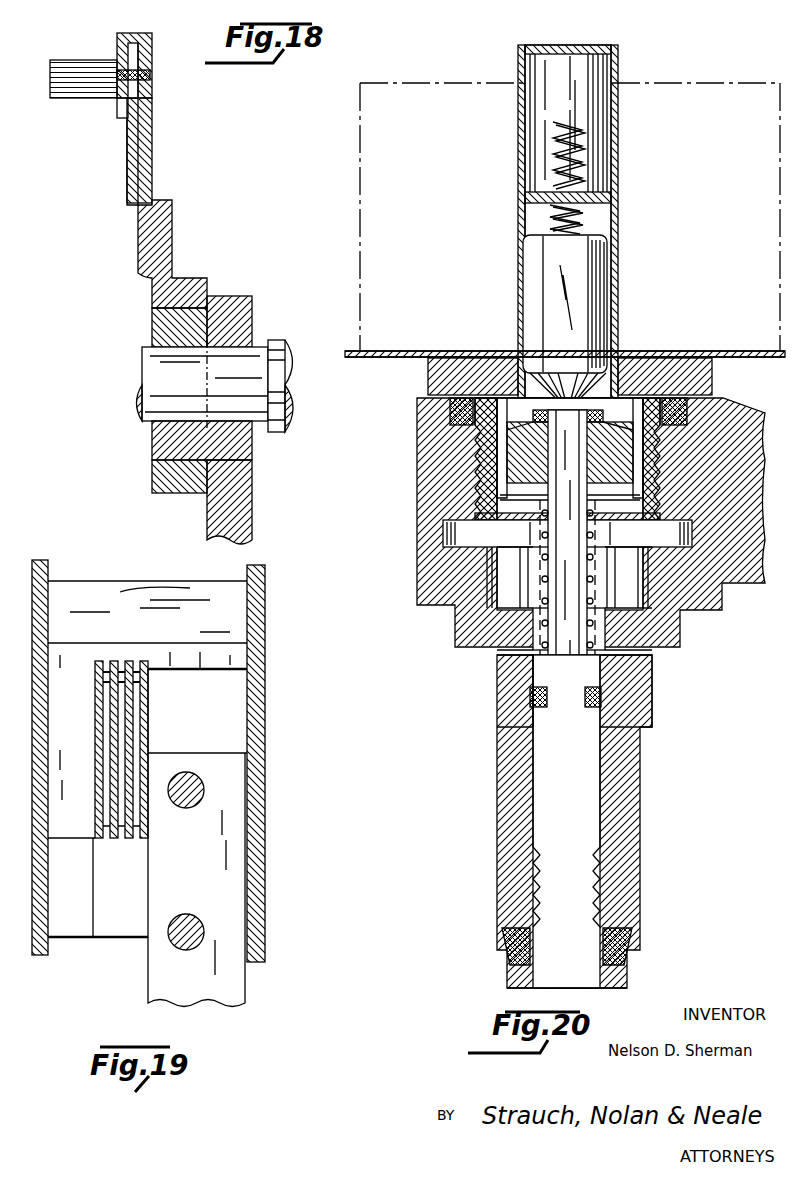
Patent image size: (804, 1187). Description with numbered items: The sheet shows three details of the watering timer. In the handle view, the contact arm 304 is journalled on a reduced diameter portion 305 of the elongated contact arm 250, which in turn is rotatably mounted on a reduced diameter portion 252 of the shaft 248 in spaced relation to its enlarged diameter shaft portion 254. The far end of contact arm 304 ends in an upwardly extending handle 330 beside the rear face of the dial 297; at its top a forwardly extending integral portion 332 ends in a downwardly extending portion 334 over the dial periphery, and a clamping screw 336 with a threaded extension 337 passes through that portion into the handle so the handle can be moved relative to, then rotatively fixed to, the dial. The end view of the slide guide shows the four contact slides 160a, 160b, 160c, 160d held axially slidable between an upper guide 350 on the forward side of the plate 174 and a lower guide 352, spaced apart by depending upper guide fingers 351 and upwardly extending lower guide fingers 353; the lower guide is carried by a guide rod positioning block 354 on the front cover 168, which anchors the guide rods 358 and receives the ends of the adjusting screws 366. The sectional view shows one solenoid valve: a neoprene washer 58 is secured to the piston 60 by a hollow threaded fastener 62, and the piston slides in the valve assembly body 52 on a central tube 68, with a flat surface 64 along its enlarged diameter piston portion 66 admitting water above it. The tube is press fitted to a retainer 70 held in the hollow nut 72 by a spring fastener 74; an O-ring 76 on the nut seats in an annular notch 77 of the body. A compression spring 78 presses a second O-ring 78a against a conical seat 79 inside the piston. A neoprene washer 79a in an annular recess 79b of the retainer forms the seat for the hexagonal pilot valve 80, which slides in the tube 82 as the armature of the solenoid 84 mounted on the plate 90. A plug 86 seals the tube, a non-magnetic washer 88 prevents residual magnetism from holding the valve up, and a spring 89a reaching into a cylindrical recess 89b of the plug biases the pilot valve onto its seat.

In FIG. 18, the forwardly extending integral portion 332 is at (143, 33).
In FIG. 18, the handle 330 is at (153, 144).
In FIG. 18, the dial 297 is at (128, 190).
In FIG. 18, the downwardly extending integral portion 334 is at (118, 112).
In FIG. 18, the clamping screw 336 is at (58, 92).
In FIG. 18, the threaded extension 337 is at (152, 76).
In FIG. 18, the contact arm 304 is at (173, 232).
In FIG. 18, the reduced diameter portion 305 is at (156, 306).
In FIG. 18, the contact arm 250 is at (236, 300).
In FIG. 18, the reduced diameter portion 252 is at (261, 432).
In FIG. 18, the enlarged diameter shaft portion 254 is at (284, 352).
In FIG. 18, the shaft 248 is at (286, 430).
In FIG. 19, the plate 174 is at (46, 572).
In FIG. 19, the front cover 168 is at (266, 660).
In FIG. 19, the contact slide 160a is at (97, 661).
In FIG. 19, the contact slide 160b is at (135, 661).
In FIG. 19, the contact slide 160c is at (114, 661).
In FIG. 19, the contact slide 160d is at (143, 661).
In FIG. 19, the upper guide fingers 351 is at (112, 690).
In FIG. 19, the upper guide 350 is at (40, 750).
In FIG. 19, the lower guide fingers 353 is at (115, 832).
In FIG. 19, the lower guide 352 is at (93, 924).
In FIG. 19, the guide rod positioning block 354 is at (215, 881).
In FIG. 19, the guide rods 358 is at (194, 790).
In FIG. 19, the adjusting screw 366 is at (196, 918).
In FIG. 20, the solenoid 84 is at (352, 158).
In FIG. 20, the tube 82 is at (619, 258).
In FIG. 20, the plug 86 is at (604, 166).
In FIG. 20, the cylindrical recess 89b is at (524, 156).
In FIG. 20, the non-magnetic washer 88 is at (528, 204).
In FIG. 20, the spring 89a is at (584, 232).
In FIG. 20, the pilot valve 80 is at (530, 268).
In FIG. 20, the plate 90 is at (368, 357).
In FIG. 20, the hollow nut 72 is at (427, 380).
In FIG. 20, the valve assembly body 52 is at (414, 526).
In FIG. 20, the O-ring 76 is at (452, 406).
In FIG. 20, the annular notch 77 is at (452, 425).
In FIG. 20, the neoprene washer 79a is at (492, 398).
In FIG. 20, the annular recess 79b is at (645, 392).
In FIG. 20, the spring fastener 74 is at (512, 502).
In FIG. 20, the retainer 70 is at (622, 502).
In FIG. 20, the compression spring 78 is at (543, 580).
In FIG. 20, the tube 68 is at (590, 566).
In FIG. 20, the flat surface 64 is at (497, 672).
In FIG. 20, the enlarged diameter piston portion 66 is at (653, 682).
In FIG. 20, the conical seat 79 is at (535, 706).
In FIG. 20, the second O-ring 78a is at (595, 708).
In FIG. 20, the piston 60 is at (648, 836).
In FIG. 20, the neoprene washer 58 is at (503, 955).
In FIG. 20, the fastener 62 is at (620, 988).